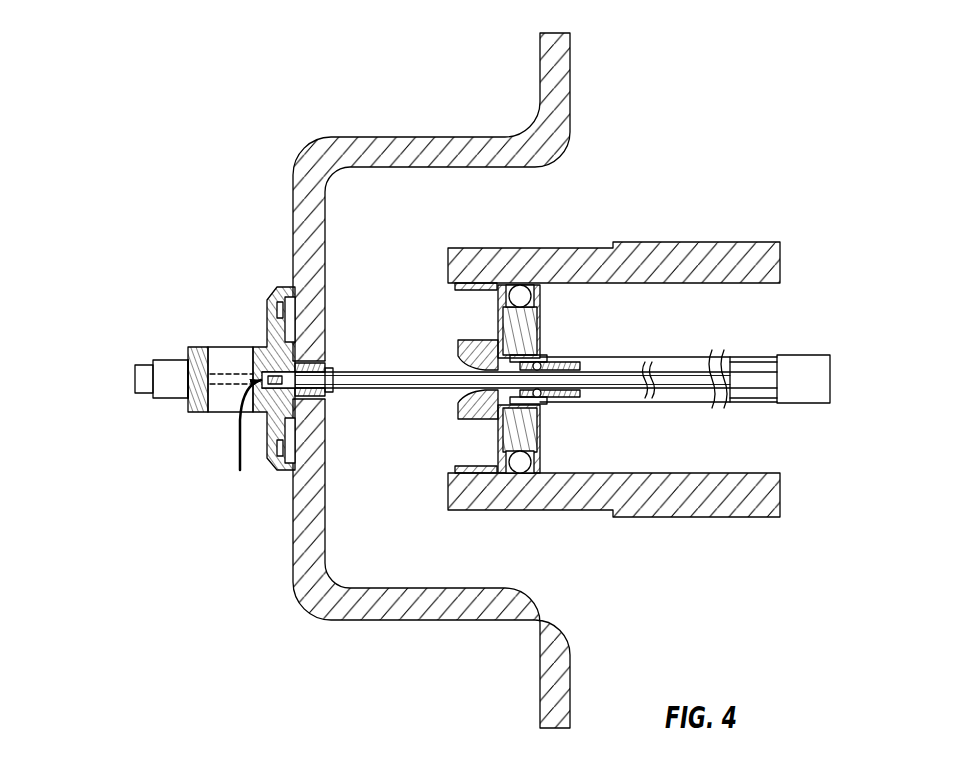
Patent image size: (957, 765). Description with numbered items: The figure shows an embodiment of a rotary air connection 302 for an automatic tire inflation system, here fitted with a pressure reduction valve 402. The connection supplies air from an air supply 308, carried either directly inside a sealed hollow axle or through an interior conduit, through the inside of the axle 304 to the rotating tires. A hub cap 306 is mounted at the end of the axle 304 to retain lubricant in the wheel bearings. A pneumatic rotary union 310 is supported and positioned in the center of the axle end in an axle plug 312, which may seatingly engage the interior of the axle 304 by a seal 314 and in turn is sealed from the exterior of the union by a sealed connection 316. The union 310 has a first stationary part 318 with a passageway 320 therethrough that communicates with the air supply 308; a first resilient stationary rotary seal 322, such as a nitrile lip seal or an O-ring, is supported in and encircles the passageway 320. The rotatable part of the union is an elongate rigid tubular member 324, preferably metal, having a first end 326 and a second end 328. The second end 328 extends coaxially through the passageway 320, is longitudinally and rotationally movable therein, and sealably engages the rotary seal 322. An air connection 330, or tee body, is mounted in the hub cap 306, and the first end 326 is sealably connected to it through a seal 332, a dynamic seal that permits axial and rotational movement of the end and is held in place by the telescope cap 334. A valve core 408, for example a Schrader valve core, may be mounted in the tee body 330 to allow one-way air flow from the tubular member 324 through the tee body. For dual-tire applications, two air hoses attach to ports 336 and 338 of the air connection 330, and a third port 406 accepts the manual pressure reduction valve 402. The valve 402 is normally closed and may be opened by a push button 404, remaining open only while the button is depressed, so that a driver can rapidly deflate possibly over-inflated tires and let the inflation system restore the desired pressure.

The rotary air connection 302 is at (565, 204).
The axle 304 is at (690, 250).
The hub cap 306 is at (457, 140).
The air supply 308 is at (851, 383).
The pneumatic rotary union 310 is at (431, 489).
The axle plug 312 is at (498, 432).
The seal 314 is at (518, 467).
The sealed connection 316 is at (515, 357).
The first stationary part 318 is at (456, 343).
The passageway 320 is at (448, 401).
The first resilient stationary rotary seal 322 is at (547, 396).
The elongate rigid tubular member 324 is at (427, 372).
The first end 326 is at (320, 370).
The second end 328 is at (680, 395).
The air connection 330 is at (188, 352).
The seal 332 is at (330, 390).
The telescope cap 334 is at (328, 372).
The port 336 is at (225, 345).
The port 338 is at (225, 415).
The pressure reduction valve 402 is at (165, 398).
The push button 404 is at (135, 378).
The third port 406 is at (185, 400).
The valve core 408 is at (240, 442).